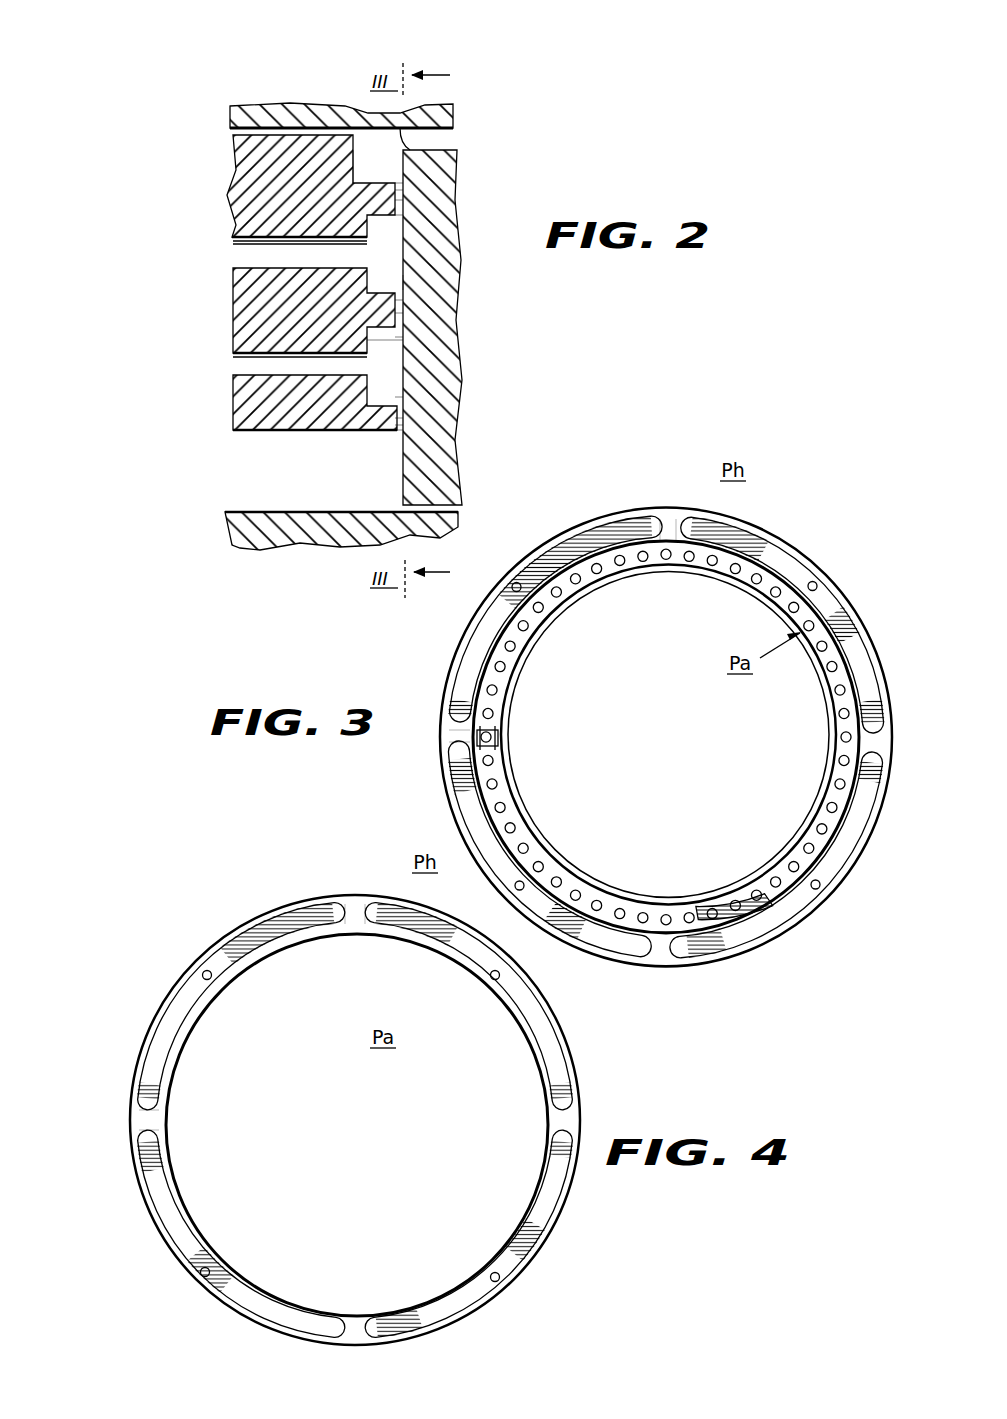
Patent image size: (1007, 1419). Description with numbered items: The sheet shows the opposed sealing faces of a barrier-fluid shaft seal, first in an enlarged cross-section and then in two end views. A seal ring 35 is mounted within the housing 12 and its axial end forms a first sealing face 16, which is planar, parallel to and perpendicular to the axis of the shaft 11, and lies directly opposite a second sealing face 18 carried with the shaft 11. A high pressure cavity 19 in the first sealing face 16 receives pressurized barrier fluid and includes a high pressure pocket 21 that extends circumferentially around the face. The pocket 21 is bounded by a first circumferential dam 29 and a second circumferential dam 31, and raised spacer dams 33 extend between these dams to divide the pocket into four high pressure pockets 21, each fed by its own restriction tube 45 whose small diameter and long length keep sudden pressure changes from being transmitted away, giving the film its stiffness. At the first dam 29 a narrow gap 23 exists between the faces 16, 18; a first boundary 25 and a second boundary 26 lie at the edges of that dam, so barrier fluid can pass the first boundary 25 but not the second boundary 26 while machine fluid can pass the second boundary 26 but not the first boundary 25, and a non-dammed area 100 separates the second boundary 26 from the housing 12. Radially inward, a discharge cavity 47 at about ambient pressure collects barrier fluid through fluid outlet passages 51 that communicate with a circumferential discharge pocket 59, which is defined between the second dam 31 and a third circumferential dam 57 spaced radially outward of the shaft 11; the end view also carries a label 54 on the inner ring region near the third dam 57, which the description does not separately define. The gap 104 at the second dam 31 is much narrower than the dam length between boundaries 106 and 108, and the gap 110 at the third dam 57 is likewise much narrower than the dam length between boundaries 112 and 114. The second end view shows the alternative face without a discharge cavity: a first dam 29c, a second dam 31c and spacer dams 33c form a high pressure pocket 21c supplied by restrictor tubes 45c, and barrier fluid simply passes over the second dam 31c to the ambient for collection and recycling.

In FIG. 2, the shaft 11 is at (241, 537).
In FIG. 2, the housing 12 is at (233, 113).
In FIG. 2, the first sealing face 16 is at (402, 188).
In FIG. 2, the second sealing face 18 is at (430, 127).
In FIG. 2, the high pressure cavity 19 is at (243, 253).
In FIG. 3, the high pressure pocket 21 is at (658, 514).
In FIG. 2, the gap 23 is at (397, 202).
In FIG. 2, the first boundary 25 is at (397, 218).
In FIG. 2, the second boundary 26 is at (398, 187).
In FIG. 2, the first circumferential dam 29 is at (402, 193).
In FIG. 3, the first circumferential dam 29 is at (591, 521).
In FIG. 2, the second circumferential dam 31 is at (397, 303).
In FIG. 3, the second circumferential dam 31 is at (483, 652).
In FIG. 3, the spacer dams 33 is at (670, 520).
In FIG. 2, the seal ring 35 is at (233, 178).
In FIG. 3, the restriction tube 45 is at (816, 585).
In FIG. 2, the discharge cavity 47 is at (232, 365).
In FIG. 3, the discharge cavity 47 is at (839, 653).
In FIG. 3, the fluid outlet passages 51 is at (758, 572).
In FIG. 3, the inner race 54 is at (835, 780).
In FIG. 2, the third circumferential dam 57 is at (398, 418).
In FIG. 3, the third circumferential dam 57 is at (478, 698).
In FIG. 2, the discharge pocket 59 is at (383, 372).
In FIG. 3, the discharge pocket 59 is at (738, 912).
In FIG. 2, the non-dammed area 100 is at (370, 157).
In FIG. 2, the gap 104 is at (402, 313).
In FIG. 2, the boundary 106 is at (403, 337).
In FIG. 2, the boundary 108 is at (405, 282).
In FIG. 2, the gap 110 is at (398, 423).
In FIG. 2, the boundary 112 is at (400, 432).
In FIG. 2, the boundary 114 is at (403, 397).
In FIG. 4, the high pressure pocket 21c is at (280, 918).
In FIG. 4, the first dam 29c is at (182, 973).
In FIG. 4, the second dam 31c is at (195, 1021).
In FIG. 4, the spacer dams 33c is at (352, 905).
In FIG. 4, the restrictor tubes 45c is at (211, 978).